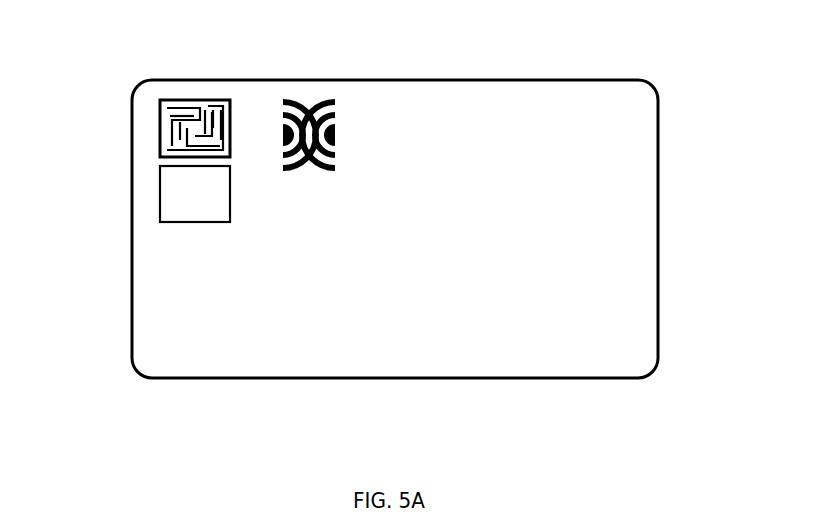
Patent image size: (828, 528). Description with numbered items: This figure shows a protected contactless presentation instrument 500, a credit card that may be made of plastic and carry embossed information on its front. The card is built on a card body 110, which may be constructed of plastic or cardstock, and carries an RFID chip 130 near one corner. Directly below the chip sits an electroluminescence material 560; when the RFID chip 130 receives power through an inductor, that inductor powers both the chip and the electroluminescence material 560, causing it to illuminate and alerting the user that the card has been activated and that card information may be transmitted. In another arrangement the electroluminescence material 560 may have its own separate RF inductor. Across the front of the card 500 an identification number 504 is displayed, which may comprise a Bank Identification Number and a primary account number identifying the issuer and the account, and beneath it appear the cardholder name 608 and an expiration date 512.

The protected contactless presentation instrument 500 is at (456, 422).
The card body 110 is at (615, 110).
The RFID chip 130 is at (160, 110).
The electroluminescence material 560 is at (175, 208).
The identification number 504 is at (453, 263).
The cardholder name 608 is at (443, 340).
The expiration date 512 is at (540, 343).